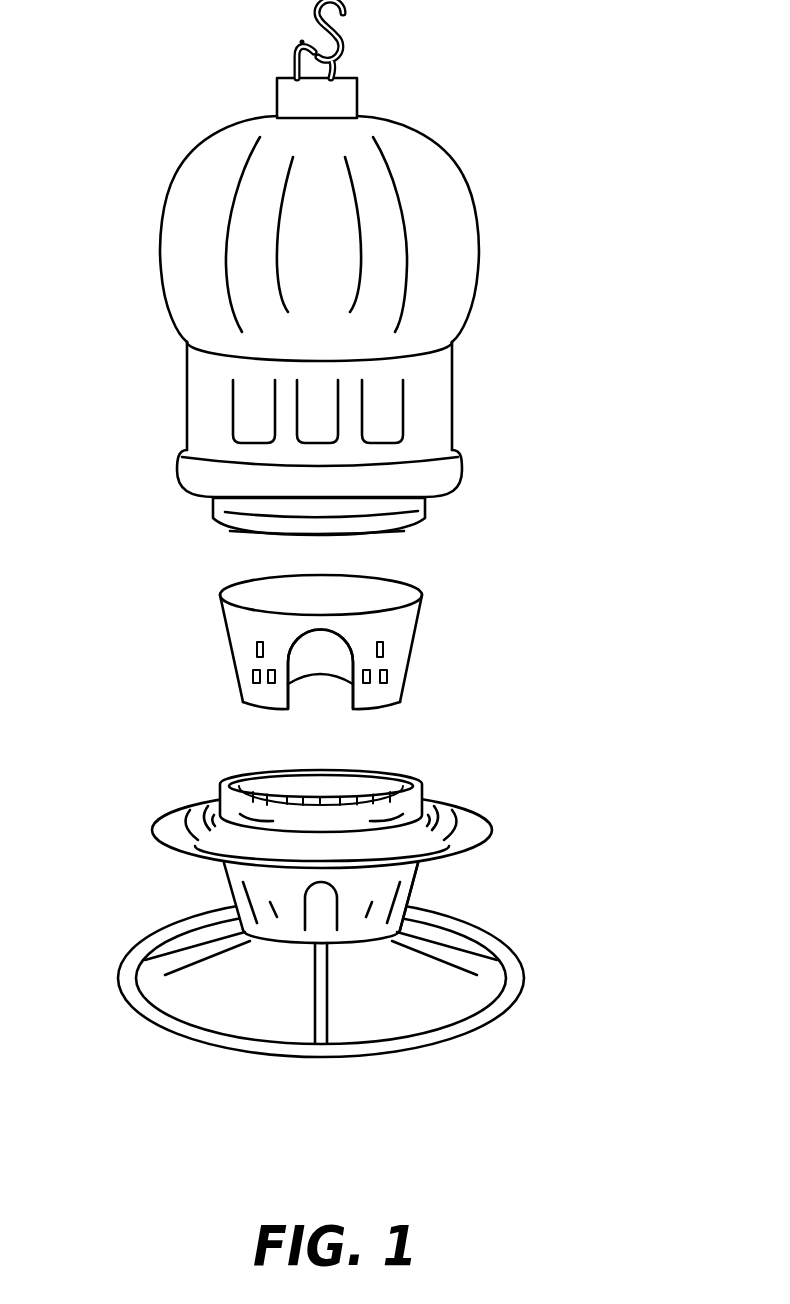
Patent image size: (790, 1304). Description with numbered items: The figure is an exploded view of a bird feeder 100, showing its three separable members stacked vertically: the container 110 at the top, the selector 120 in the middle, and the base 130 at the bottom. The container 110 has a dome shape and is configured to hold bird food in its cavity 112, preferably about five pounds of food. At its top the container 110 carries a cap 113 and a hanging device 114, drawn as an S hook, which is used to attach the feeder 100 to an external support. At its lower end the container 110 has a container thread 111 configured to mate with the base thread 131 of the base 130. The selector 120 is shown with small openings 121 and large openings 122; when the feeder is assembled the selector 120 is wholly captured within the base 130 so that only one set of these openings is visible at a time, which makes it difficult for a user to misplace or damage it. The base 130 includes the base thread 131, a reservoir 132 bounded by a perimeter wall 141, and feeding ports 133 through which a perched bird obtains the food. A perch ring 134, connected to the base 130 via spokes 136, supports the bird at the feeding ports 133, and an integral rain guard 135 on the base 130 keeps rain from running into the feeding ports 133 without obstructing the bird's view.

The feeder 100 is at (602, 85).
The container 110 is at (160, 243).
The container thread 111 is at (427, 508).
The cavity 112 is at (247, 532).
The cap 113 is at (357, 100).
The hanging device 114 is at (343, 7).
The selector 120 is at (230, 657).
The small openings 121 is at (383, 648).
The large openings 122 is at (318, 688).
The base 130 is at (228, 874).
The base thread 131 is at (390, 783).
The reservoir 132 is at (277, 798).
The feeding ports 133 is at (310, 931).
The perch ring 134 is at (497, 1007).
The rain guard 135 is at (477, 833).
The spokes 136 is at (327, 1017).
The perimeter wall 141 is at (407, 878).